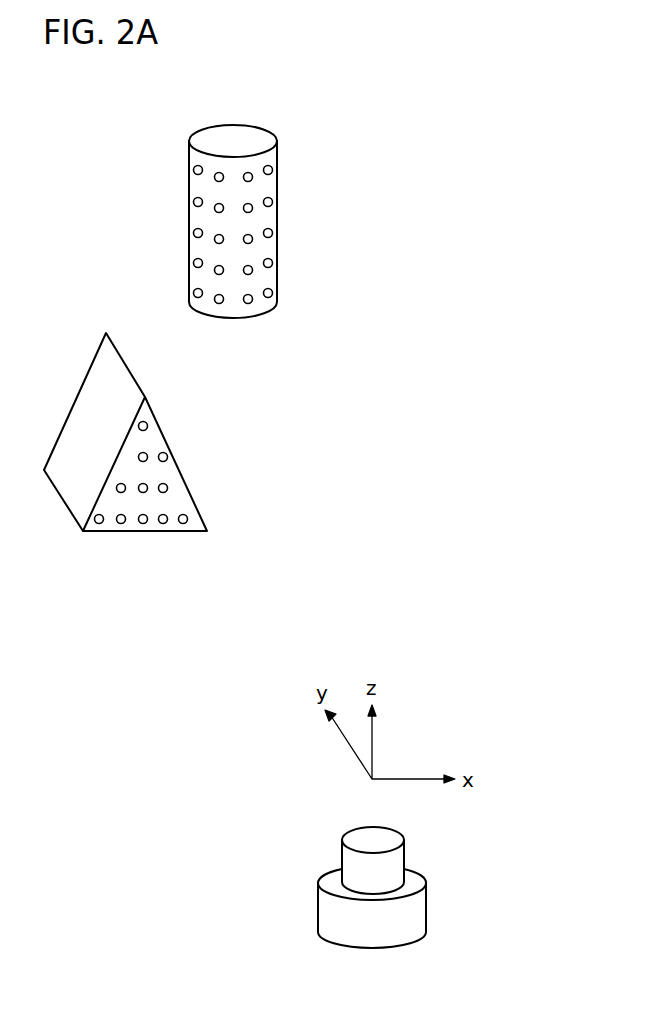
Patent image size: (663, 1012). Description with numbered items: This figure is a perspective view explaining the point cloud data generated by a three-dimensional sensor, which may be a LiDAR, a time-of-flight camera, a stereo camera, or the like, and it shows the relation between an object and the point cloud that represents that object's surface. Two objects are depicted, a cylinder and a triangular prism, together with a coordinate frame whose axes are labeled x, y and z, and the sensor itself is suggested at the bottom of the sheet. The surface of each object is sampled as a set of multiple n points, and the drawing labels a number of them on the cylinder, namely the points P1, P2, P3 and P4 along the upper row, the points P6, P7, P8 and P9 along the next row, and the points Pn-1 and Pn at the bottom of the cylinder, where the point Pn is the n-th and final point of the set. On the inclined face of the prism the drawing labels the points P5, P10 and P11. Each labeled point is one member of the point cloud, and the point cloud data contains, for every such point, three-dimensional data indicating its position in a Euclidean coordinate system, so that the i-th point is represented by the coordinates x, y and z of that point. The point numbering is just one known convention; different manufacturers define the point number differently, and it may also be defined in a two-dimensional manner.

The first point of the point cloud P1 is at (193, 164).
The second point of the point cloud P2 is at (220, 172).
The third point of the point cloud P3 is at (249, 172).
The fourth point of the point cloud P4 is at (273, 160).
The fifth point of the point cloud P5 is at (146, 421).
The sixth point of the point cloud P6 is at (193, 191).
The seventh point of the point cloud P7 is at (215, 210).
The eighth point of the point cloud P8 is at (252, 207).
The ninth point of the point cloud P9 is at (273, 191).
The tenth point of the point cloud P10 is at (146, 452).
The eleventh point of the point cloud P11 is at (164, 461).
The second-to-last point of the point cloud Pn-1 is at (247, 304).
The last point of the point cloud Pn is at (269, 299).